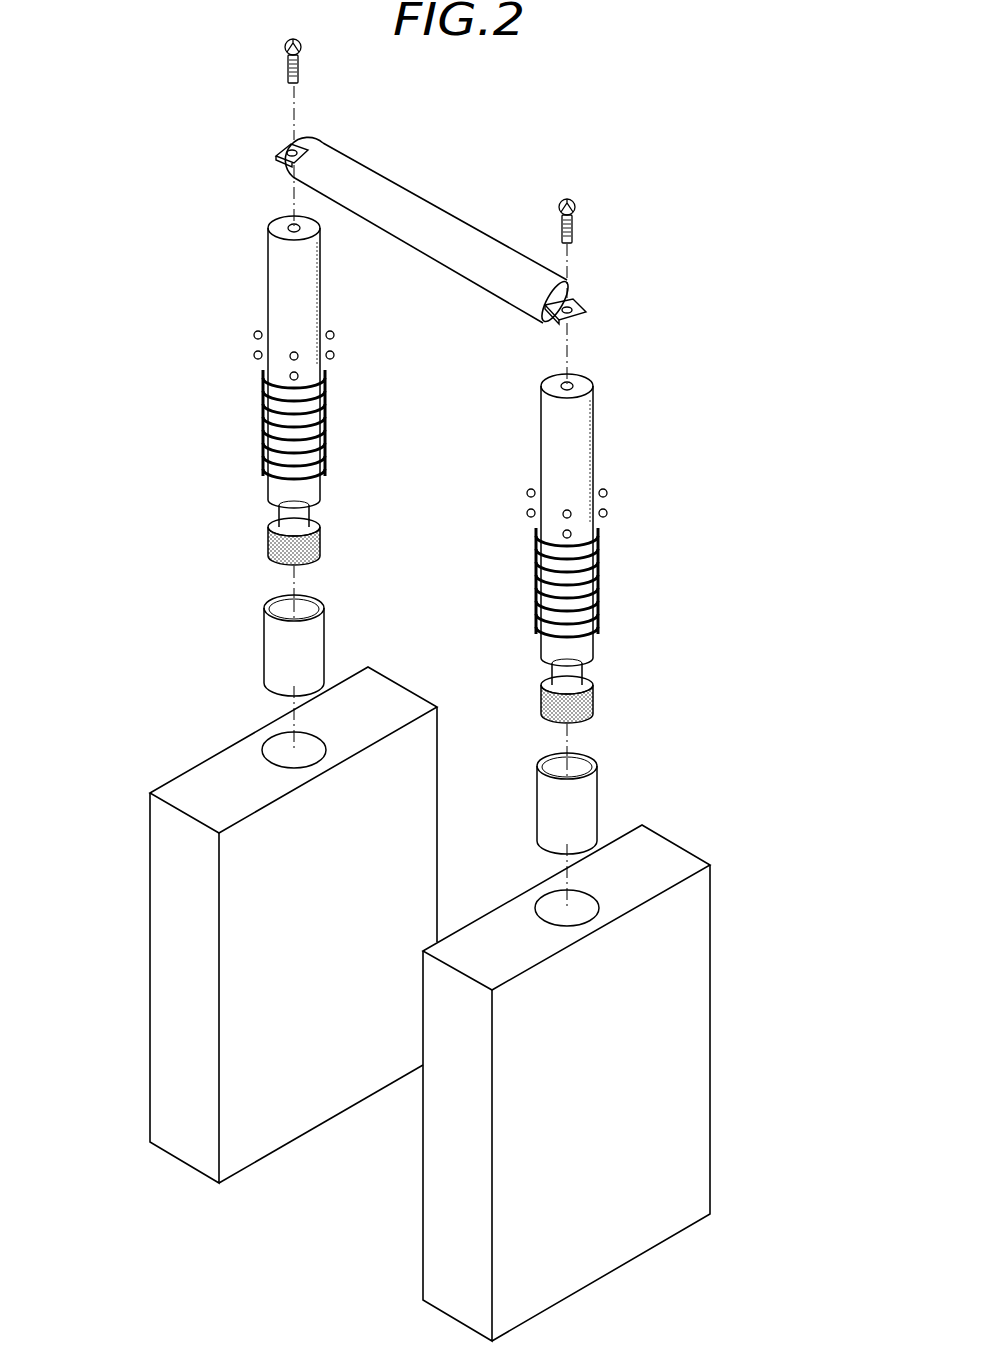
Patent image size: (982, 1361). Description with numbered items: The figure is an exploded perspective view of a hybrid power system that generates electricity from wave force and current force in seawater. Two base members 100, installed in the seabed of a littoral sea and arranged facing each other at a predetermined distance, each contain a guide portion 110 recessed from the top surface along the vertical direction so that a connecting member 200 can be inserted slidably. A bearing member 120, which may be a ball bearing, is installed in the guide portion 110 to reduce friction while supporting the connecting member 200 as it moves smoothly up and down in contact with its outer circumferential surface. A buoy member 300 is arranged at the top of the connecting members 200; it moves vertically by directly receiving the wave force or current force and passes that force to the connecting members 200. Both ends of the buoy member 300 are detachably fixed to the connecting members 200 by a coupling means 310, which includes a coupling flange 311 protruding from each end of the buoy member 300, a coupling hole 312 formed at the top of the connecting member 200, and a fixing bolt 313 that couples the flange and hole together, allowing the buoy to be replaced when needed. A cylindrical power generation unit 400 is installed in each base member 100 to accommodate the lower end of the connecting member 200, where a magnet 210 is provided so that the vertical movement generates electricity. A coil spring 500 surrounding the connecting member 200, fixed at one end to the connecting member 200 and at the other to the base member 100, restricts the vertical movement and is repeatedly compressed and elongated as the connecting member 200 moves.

The base member 100 is at (150, 858).
The guide portion 110 is at (280, 750).
The bearing member 120 is at (254, 355).
The connecting member 200 is at (268, 272).
The magnet 210 is at (268, 547).
The buoy member 300 is at (450, 217).
The coupling means 310 is at (444, 185).
The coupling flange 311 is at (279, 150).
The coupling hole 312 is at (290, 227).
The fixing bolt 313 is at (288, 68).
The power generation unit 400 is at (264, 633).
The coil spring 500 is at (263, 432).